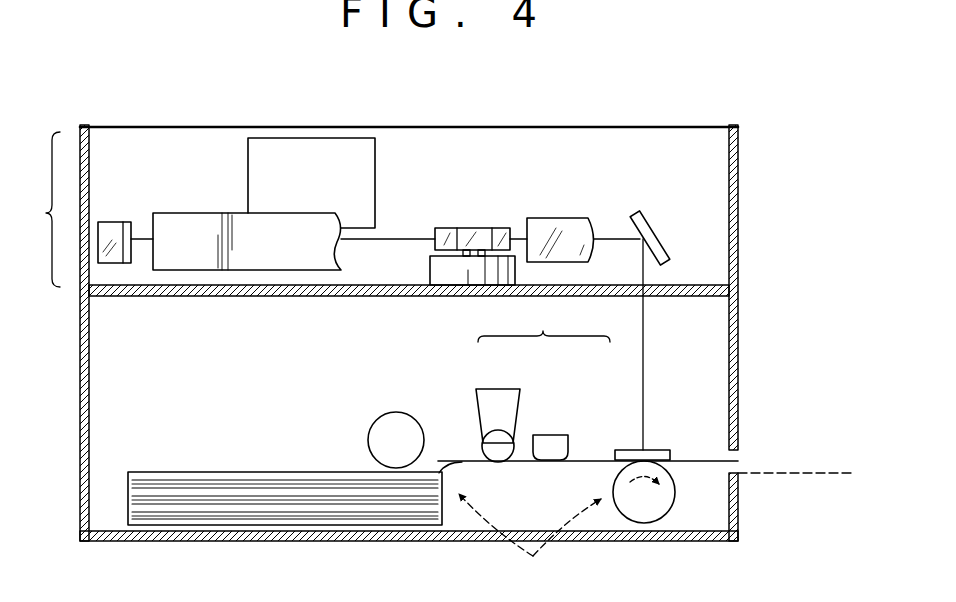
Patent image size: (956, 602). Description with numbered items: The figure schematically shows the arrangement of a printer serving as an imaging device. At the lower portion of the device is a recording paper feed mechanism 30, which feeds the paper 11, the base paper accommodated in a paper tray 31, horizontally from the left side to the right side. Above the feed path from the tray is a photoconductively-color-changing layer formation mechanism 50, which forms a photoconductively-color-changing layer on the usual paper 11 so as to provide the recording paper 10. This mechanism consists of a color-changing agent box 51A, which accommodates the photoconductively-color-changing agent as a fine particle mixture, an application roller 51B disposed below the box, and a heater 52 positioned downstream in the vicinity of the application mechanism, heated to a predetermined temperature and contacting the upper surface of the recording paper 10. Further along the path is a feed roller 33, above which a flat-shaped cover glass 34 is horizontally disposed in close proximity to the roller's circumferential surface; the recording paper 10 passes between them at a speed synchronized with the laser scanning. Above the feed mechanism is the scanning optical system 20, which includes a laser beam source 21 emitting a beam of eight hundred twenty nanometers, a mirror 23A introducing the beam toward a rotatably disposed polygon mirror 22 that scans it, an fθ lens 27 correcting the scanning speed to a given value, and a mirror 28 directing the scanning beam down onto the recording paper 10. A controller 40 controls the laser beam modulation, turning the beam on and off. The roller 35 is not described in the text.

The recording paper 10 is at (706, 459).
The paper 11 is at (207, 507).
The scanning optical system 20 is at (34, 209).
The laser beam source 21 is at (185, 222).
The polygon mirror 22 is at (478, 226).
The mirror 23A is at (114, 229).
The fθ lens 27 is at (575, 218).
The mirror 28 is at (655, 237).
The recording paper feed mechanism 30 is at (530, 548).
The paper tray 31 is at (373, 527).
The feed roller 33 is at (660, 522).
The cover glass 34 is at (662, 450).
The feed roller 35 is at (413, 428).
The controller 40 is at (342, 144).
The photoconductively-color-changing layer formation mechanism 50 is at (544, 322).
The color-changing agent box 51A is at (503, 389).
The application roller 51B is at (487, 462).
The heater 52 is at (553, 434).